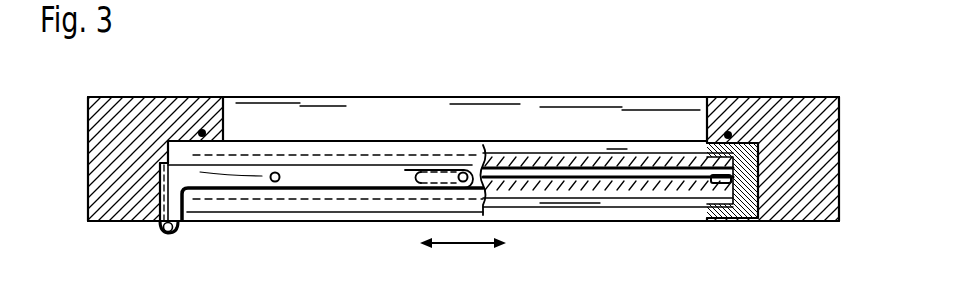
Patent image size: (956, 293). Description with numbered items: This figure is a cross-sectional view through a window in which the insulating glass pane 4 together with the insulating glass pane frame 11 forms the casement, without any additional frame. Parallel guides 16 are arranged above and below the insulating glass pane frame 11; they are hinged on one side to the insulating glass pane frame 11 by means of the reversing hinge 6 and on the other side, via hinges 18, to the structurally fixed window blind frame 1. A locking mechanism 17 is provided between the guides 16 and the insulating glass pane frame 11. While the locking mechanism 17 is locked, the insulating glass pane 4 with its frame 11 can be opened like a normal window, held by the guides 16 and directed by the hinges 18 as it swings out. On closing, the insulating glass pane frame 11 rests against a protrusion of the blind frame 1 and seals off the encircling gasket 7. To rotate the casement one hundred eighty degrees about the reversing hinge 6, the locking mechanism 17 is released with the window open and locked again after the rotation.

The window blind frame 1 is at (120, 185).
The insulating glass pane 4 is at (562, 170).
The reversing hinge 6 is at (463, 172).
The encircling gasket 7 is at (729, 136).
The insulating glass pane frame 11 is at (745, 205).
The parallel guides 16 is at (355, 170).
The locking mechanism 17 is at (275, 172).
The hinges 18 is at (165, 231).